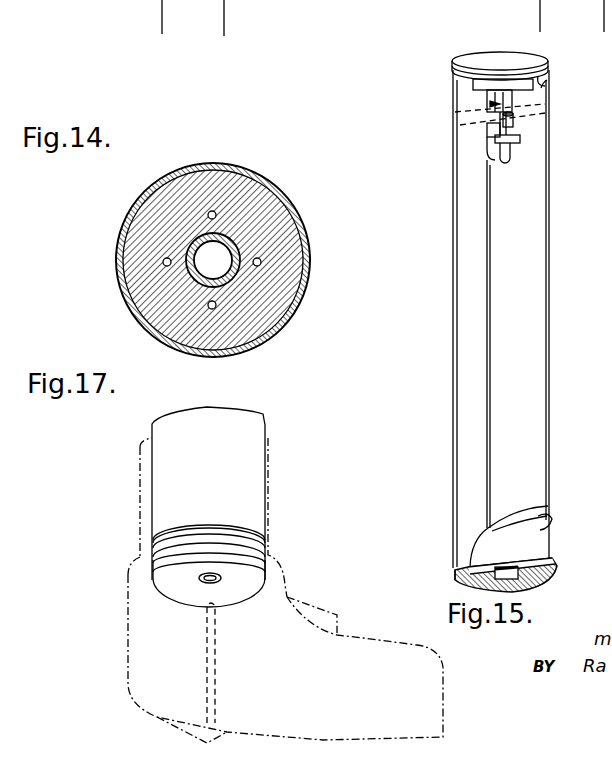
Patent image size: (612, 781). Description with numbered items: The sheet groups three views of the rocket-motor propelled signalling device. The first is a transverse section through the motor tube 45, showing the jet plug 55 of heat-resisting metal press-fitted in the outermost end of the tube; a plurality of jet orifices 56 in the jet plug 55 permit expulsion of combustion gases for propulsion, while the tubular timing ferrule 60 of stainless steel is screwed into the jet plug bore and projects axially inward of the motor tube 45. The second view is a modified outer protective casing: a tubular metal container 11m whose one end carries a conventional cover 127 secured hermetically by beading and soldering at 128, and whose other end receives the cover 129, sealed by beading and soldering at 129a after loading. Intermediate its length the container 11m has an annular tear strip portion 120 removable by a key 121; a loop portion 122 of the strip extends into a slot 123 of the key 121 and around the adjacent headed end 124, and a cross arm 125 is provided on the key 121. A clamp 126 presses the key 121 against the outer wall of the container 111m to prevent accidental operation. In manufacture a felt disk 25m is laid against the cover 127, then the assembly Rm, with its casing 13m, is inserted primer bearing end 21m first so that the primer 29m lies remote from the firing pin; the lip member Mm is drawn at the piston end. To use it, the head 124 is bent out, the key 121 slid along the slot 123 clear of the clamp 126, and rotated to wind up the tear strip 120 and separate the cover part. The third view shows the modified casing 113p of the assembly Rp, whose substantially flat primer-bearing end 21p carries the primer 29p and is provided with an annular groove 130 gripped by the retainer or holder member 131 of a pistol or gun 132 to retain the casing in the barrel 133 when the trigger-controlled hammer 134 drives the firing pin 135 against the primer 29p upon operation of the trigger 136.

In FIG. 14, the motor tube 45 is at (308, 238).
In FIG. 14, the jet plug 55 is at (267, 210).
In FIG. 14, the jet orifices 56 is at (214, 212).
In FIG. 14, the tubular timing ferrule 60 is at (233, 268).
In FIG. 15, the container 11m is at (543, 272).
In FIG. 15, the container outer wall 111m is at (550, 73).
In FIG. 15, the assembly Rm is at (543, 88).
In FIG. 15, the lip member Mm is at (537, 517).
In FIG. 15, the cover 129 is at (490, 53).
In FIG. 15, the beading and soldering 129a is at (452, 63).
In FIG. 15, the cross arm 125 is at (477, 83).
In FIG. 15, the annular tear strip portion 120 is at (550, 117).
In FIG. 15, the key 121 is at (490, 104).
In FIG. 15, the loop portion 122 is at (513, 123).
In FIG. 15, the slot 123 is at (487, 129).
In FIG. 15, the headed end 124 is at (520, 137).
In FIG. 15, the clamp 126 is at (492, 145).
In FIG. 15, the primer bearing end 21m is at (530, 566).
In FIG. 15, the casing 13m is at (488, 547).
In FIG. 15, the cover 127 is at (548, 580).
In FIG. 15, the beading and soldering 128 is at (553, 570).
In FIG. 15, the primer 29m is at (500, 580).
In FIG. 15, the disk 25m is at (468, 570).
In FIG. 17, the cylinder body 113p is at (262, 470).
In FIG. 17, the rocket-motor propelled assembly Rp is at (280, 417).
In FIG. 17, the annular groove 130 is at (268, 548).
In FIG. 17, the primer-bearing end 21p is at (256, 602).
In FIG. 17, the primer 29p is at (216, 582).
In FIG. 17, the retainer or holder member 131 is at (152, 549).
In FIG. 17, the pistol or gun 132 is at (147, 495).
In FIG. 17, the barrel 133 is at (140, 610).
In FIG. 17, the trigger-controlled hammer 134 is at (183, 732).
In FIG. 17, the firing pin 135 is at (207, 678).
In FIG. 17, the trigger 136 is at (327, 612).